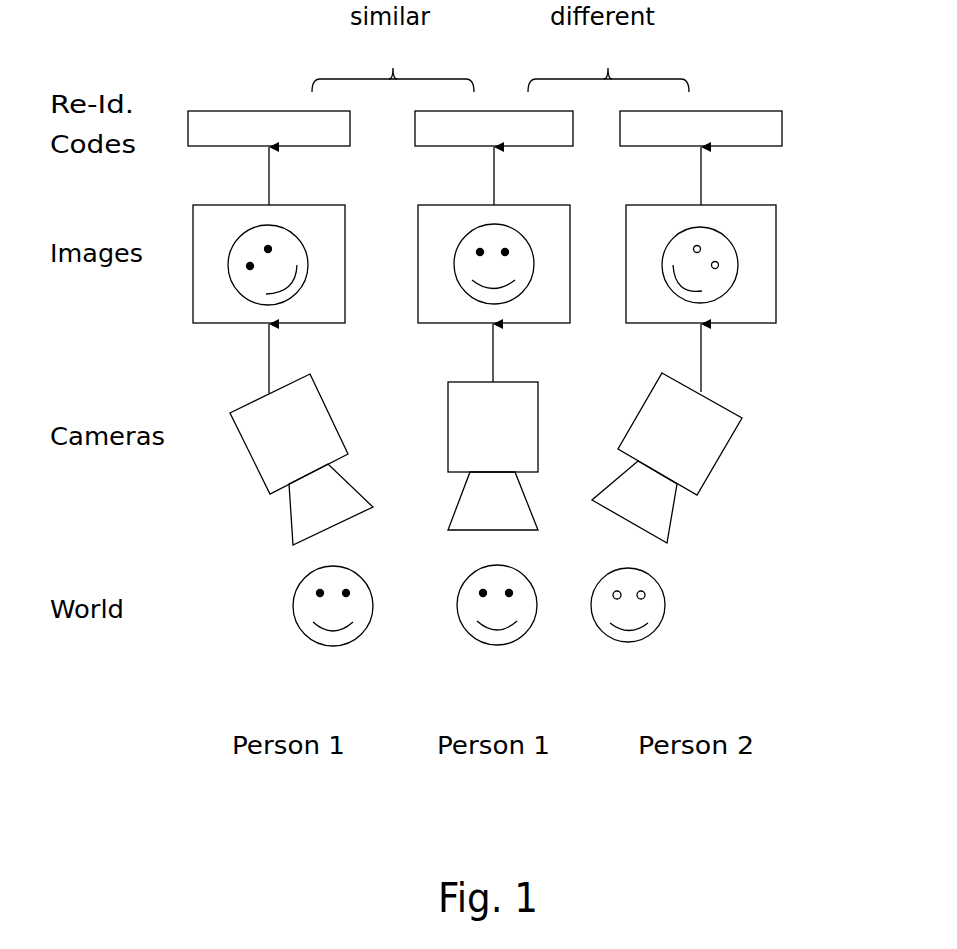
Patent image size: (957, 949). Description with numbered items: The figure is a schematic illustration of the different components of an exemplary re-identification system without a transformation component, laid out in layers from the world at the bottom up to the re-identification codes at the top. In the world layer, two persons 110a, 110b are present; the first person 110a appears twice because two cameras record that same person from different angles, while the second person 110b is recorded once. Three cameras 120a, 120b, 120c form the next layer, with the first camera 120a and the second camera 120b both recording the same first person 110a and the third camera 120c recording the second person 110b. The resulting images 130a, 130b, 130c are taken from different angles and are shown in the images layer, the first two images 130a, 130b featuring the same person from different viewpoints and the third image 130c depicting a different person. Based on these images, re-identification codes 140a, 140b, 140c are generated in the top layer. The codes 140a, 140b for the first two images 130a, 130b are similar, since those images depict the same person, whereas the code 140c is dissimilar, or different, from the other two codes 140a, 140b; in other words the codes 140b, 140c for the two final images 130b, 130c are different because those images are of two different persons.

The person 110a is at (468, 635).
The person 110b is at (665, 620).
The camera 120a is at (348, 454).
The camera 120b is at (538, 400).
The camera 120c is at (708, 474).
The image 130a is at (345, 323).
The image 130b is at (570, 323).
The image 130c is at (776, 323).
The re-identification code 140a is at (350, 146).
The re-identification code 140b is at (573, 146).
The re-identification code 140c is at (782, 146).